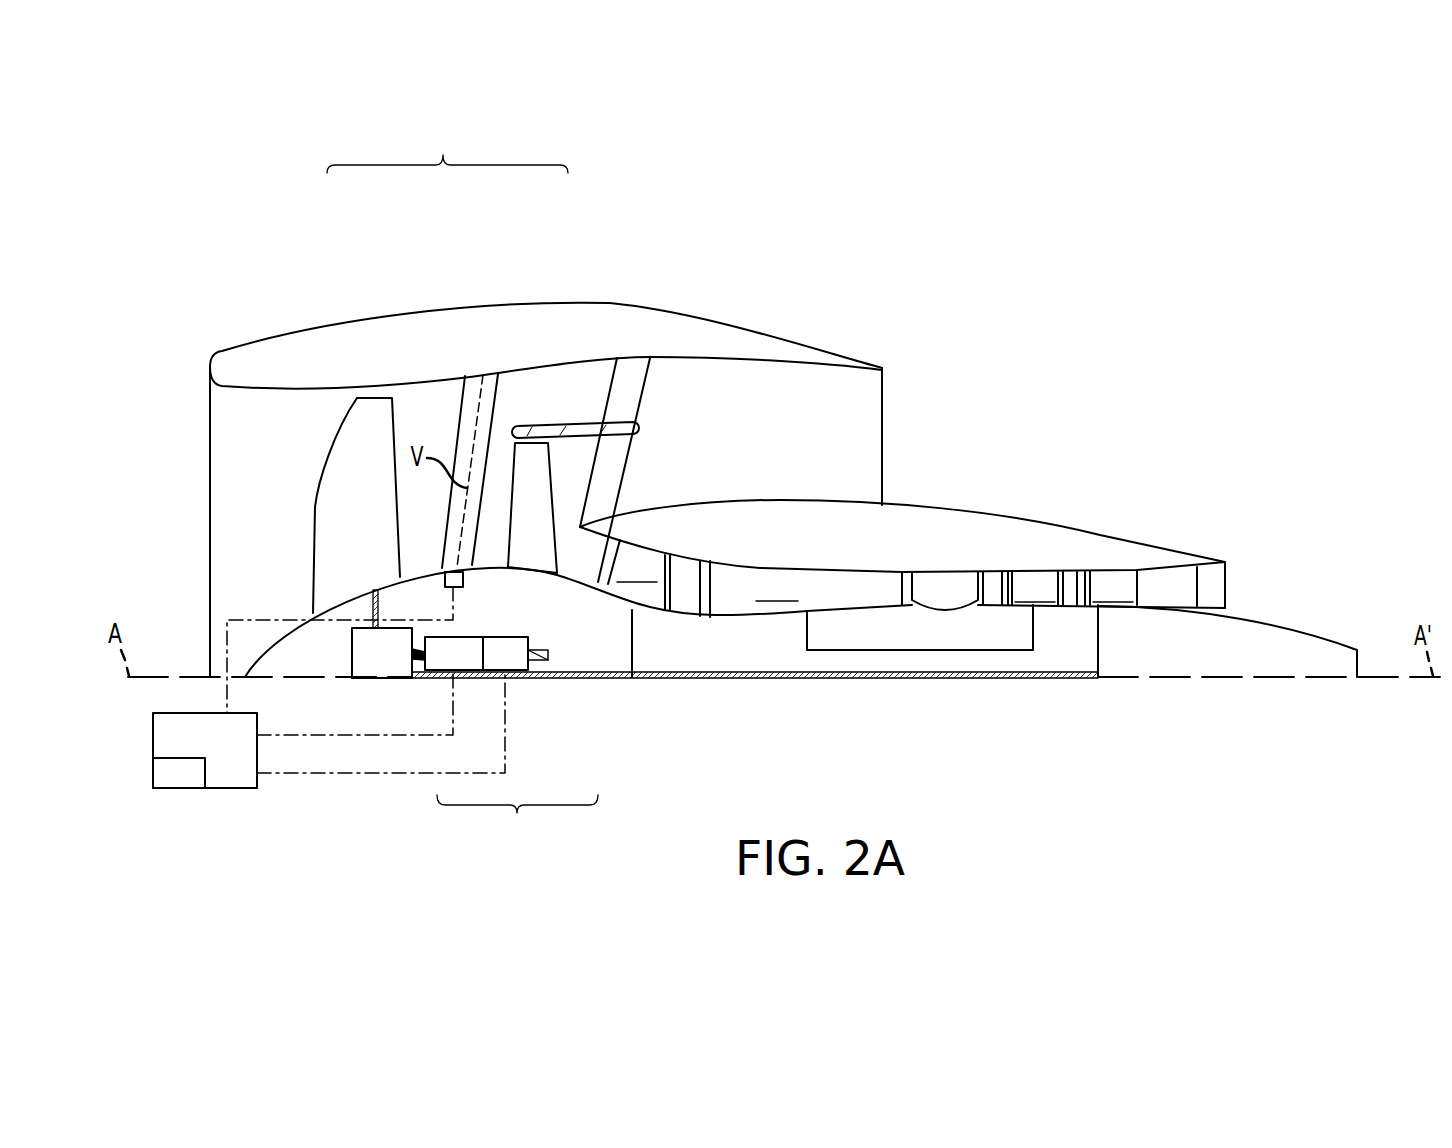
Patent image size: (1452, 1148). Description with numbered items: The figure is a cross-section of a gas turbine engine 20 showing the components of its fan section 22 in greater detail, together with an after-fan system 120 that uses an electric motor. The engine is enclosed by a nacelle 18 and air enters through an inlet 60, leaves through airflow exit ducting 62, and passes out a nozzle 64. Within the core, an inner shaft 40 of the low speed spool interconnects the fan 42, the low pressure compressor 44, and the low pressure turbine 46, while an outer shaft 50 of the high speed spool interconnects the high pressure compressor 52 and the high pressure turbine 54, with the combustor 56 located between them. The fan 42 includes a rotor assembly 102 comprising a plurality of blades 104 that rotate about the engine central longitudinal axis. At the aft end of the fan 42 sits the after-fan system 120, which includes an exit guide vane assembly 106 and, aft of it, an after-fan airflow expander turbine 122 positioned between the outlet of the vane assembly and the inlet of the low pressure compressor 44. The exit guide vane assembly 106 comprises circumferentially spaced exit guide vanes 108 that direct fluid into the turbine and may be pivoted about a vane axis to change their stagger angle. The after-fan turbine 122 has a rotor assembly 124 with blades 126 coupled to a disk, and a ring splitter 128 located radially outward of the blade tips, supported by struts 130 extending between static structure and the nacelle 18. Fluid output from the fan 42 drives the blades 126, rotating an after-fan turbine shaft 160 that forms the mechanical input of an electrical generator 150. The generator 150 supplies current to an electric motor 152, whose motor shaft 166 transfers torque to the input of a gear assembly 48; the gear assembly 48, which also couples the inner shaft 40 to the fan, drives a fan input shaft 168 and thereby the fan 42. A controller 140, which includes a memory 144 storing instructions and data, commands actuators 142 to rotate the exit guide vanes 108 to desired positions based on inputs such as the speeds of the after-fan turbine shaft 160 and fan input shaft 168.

The nacelle 18 is at (335, 338).
The gas turbine engine 20 is at (168, 564).
The fan section 22 is at (447, 146).
The inner shaft 40 is at (653, 680).
The fan 42 is at (302, 472).
The low pressure compressor 44 is at (630, 550).
The low pressure turbine 46 is at (1125, 577).
The gear assembly 48 is at (366, 667).
The outer shaft 50 is at (923, 652).
The high pressure compressor 52 is at (830, 587).
The high pressure turbine 54 is at (1040, 578).
The combustor 56 is at (953, 585).
The inlet 60 is at (202, 388).
The airflow exit ducting 62 is at (892, 398).
The nozzle 64 is at (1265, 625).
The rotor assembly 102 is at (302, 561).
The blade 104 is at (343, 527).
The exit guide vane assembly 106 is at (447, 436).
The exit guide vane 108 is at (480, 385).
The after-fan system 120 is at (517, 822).
The after-fan airflow expander turbine 122 is at (512, 397).
The rotor assembly 124 is at (563, 548).
The blade 126 is at (515, 526).
The ring splitter 128 is at (561, 430).
The strut 130 is at (637, 385).
The controller 140 is at (190, 754).
The actuator 142 is at (465, 578).
The memory 144 is at (163, 784).
The electrical generator 150 is at (490, 667).
The electric motor 152 is at (436, 667).
The after-fan turbine shaft 160 is at (540, 662).
The motor shaft 166 is at (416, 663).
The fan input shaft 168 is at (379, 605).